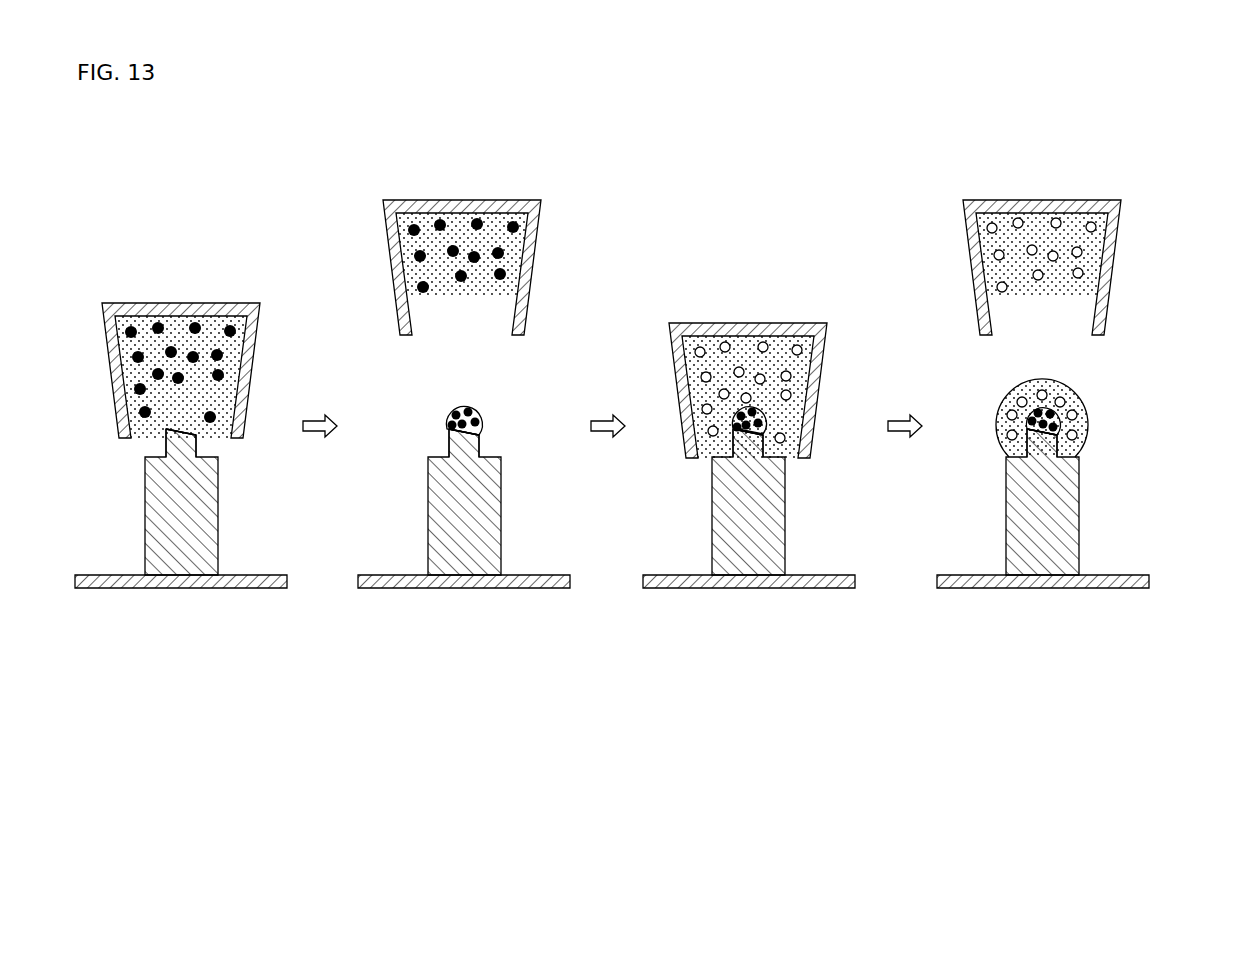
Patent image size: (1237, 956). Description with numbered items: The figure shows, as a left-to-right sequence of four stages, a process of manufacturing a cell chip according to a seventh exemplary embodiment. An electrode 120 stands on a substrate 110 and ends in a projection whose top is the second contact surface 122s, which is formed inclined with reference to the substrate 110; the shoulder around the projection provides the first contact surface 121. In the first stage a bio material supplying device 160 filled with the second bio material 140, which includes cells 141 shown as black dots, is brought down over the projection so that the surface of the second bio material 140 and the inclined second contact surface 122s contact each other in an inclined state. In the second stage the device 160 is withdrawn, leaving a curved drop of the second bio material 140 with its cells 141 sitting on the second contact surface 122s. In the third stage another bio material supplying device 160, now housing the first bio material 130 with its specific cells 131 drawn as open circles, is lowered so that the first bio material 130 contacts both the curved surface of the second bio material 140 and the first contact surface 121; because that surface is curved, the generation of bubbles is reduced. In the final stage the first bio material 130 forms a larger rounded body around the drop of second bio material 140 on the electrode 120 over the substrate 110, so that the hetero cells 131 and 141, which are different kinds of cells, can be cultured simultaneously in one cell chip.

The substrate 110 is at (190, 589).
The electrode 120 is at (245, 532).
The first contact surface 121 is at (212, 456).
The second contact surface 122s is at (170, 428).
The first bio material 130 is at (710, 342).
The cell 131 is at (763, 342).
The second bio material 140 is at (145, 322).
The cell 141 is at (197, 322).
The bio material supplying device 160 is at (260, 332).